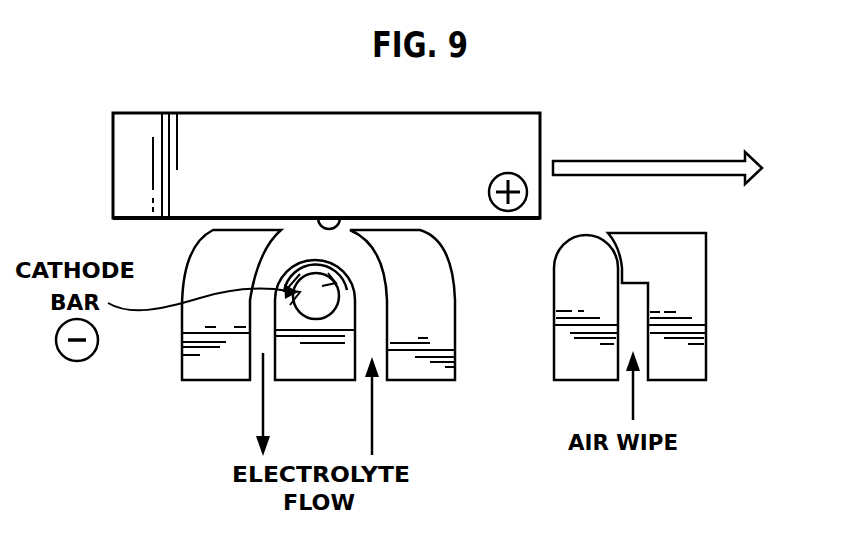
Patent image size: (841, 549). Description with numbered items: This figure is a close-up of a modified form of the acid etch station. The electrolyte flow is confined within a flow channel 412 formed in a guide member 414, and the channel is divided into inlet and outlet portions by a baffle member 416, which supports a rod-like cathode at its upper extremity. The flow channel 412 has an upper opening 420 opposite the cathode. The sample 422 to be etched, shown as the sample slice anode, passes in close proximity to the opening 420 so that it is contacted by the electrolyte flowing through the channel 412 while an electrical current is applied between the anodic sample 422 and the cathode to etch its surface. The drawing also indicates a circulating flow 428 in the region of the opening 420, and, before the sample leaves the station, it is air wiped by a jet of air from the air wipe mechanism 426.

The sample 422 is at (124, 148).
The upper opening 420 is at (342, 218).
The rotating electrolyte flow 428 is at (302, 275).
The guide member 414 is at (190, 333).
The baffle member 416 is at (302, 368).
The flow channel 412 is at (370, 318).
The air wipe station 426 is at (722, 269).